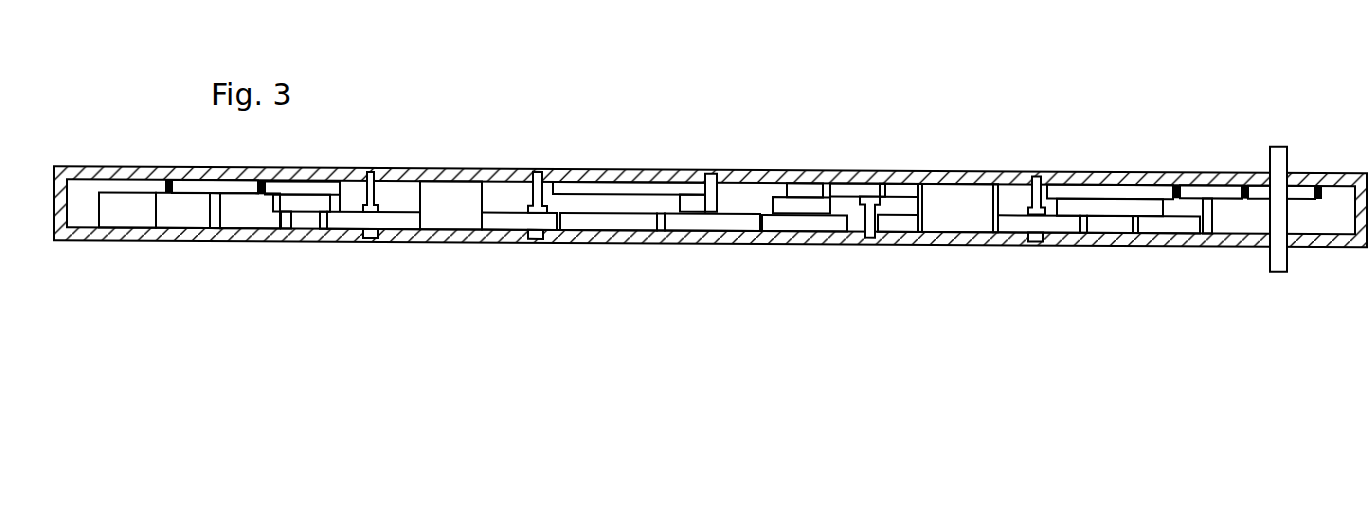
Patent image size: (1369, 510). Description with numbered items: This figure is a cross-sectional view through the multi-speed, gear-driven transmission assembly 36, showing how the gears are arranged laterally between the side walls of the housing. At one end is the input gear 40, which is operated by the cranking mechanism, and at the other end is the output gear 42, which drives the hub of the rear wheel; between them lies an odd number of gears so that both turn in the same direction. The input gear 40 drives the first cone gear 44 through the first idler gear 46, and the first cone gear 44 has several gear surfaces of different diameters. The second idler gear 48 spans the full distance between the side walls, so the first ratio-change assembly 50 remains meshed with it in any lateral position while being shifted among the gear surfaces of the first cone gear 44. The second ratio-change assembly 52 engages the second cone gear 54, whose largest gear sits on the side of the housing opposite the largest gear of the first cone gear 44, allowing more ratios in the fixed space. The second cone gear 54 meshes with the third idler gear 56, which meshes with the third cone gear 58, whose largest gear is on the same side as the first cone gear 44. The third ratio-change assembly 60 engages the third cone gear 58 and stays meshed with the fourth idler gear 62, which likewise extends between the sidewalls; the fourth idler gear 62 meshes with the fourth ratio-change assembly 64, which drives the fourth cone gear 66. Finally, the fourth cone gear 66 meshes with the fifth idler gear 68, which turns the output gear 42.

The transmission assembly 36 is at (713, 165).
The input gear 40 is at (1291, 190).
The output gear 42 is at (147, 212).
The first cone gear 44 is at (1093, 208).
The first idler gear 46 is at (1206, 193).
The second idler gear 48 is at (970, 220).
The first ratio-change assembly 50 is at (1052, 222).
The second ratio-change assembly 52 is at (895, 195).
The second cone gear 54 is at (808, 225).
The third idler gear 56 is at (735, 220).
The third cone gear 58 is at (631, 206).
The third ratio-change assembly 60 is at (557, 220).
The fourth idler gear 62 is at (455, 218).
The fourth ratio-change assembly 64 is at (398, 219).
The fourth cone gear 66 is at (303, 218).
The fifth idler gear 68 is at (242, 190).